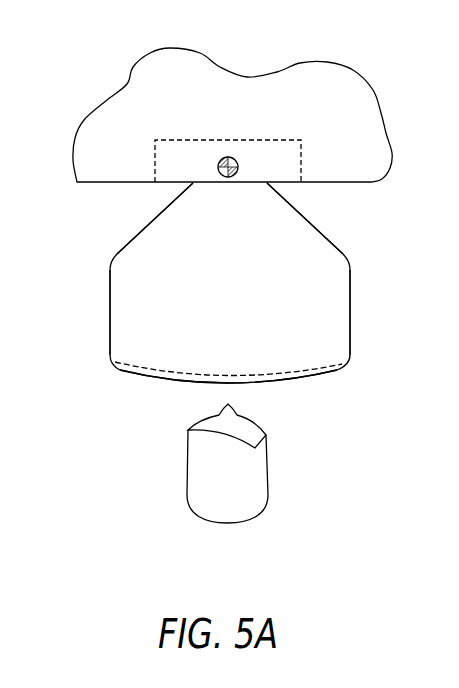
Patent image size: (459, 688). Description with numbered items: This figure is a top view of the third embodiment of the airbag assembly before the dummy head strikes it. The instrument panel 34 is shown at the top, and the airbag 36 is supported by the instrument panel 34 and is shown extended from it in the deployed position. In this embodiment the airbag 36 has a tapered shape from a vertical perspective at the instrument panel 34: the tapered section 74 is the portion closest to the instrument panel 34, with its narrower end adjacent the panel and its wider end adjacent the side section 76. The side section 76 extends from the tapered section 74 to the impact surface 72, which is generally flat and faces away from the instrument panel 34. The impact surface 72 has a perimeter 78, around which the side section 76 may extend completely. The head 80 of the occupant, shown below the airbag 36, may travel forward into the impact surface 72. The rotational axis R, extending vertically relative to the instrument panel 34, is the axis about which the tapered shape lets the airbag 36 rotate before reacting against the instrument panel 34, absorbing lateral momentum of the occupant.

The instrument panel 34 is at (365, 183).
The airbag 36 is at (344, 375).
The impact surface 72 is at (153, 382).
The tapered section 74 is at (142, 232).
The side section 76 is at (108, 305).
The perimeter 78 is at (290, 373).
The head 80 is at (268, 497).
The rotational axis R is at (227, 157).